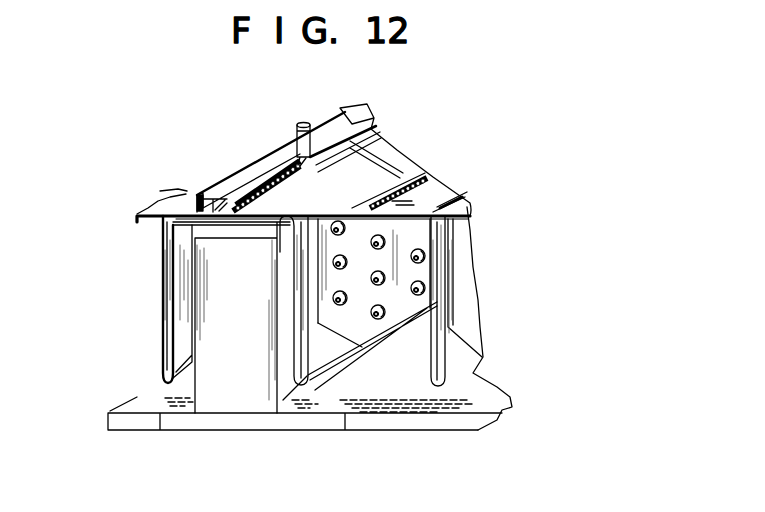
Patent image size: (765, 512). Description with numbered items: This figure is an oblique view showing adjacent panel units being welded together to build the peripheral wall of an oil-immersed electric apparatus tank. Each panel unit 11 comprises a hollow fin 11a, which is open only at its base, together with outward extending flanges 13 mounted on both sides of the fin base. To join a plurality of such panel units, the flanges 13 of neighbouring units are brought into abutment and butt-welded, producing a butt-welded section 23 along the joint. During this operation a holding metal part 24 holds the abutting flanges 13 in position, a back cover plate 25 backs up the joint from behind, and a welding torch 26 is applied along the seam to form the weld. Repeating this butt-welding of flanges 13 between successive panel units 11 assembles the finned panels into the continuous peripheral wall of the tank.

The panel unit 11 is at (405, 145).
The hollow fin 11a is at (163, 333).
The flanges 13 is at (403, 167).
The butt-welded section 23 is at (284, 176).
The holding metal part 24 is at (240, 176).
The back cover plate 25 is at (210, 230).
The welding torch 26 is at (306, 126).